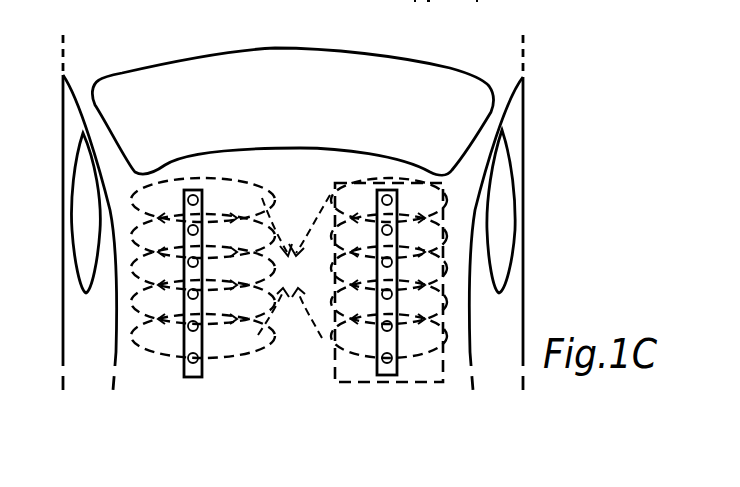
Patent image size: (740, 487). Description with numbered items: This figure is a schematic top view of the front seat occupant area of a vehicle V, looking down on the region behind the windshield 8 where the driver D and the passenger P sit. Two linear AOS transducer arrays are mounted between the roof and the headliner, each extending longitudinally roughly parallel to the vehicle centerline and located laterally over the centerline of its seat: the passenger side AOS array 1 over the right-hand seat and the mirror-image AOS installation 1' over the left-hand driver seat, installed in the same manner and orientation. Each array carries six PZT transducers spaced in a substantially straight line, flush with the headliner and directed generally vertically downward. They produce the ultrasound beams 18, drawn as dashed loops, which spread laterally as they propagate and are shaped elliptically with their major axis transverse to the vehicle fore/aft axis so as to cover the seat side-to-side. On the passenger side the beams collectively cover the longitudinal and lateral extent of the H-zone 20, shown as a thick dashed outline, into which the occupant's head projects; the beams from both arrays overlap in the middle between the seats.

The linear AOS transducer array 1 is at (389, 237).
The mirror-image AOS installation 1' is at (203, 237).
The windshield 8 is at (300, 104).
The ultrasound beams 18 is at (294, 266).
The H-zone 20 is at (332, 358).
The vehicle V is at (537, 205).
The driver D is at (152, 137).
The passenger P is at (452, 139).